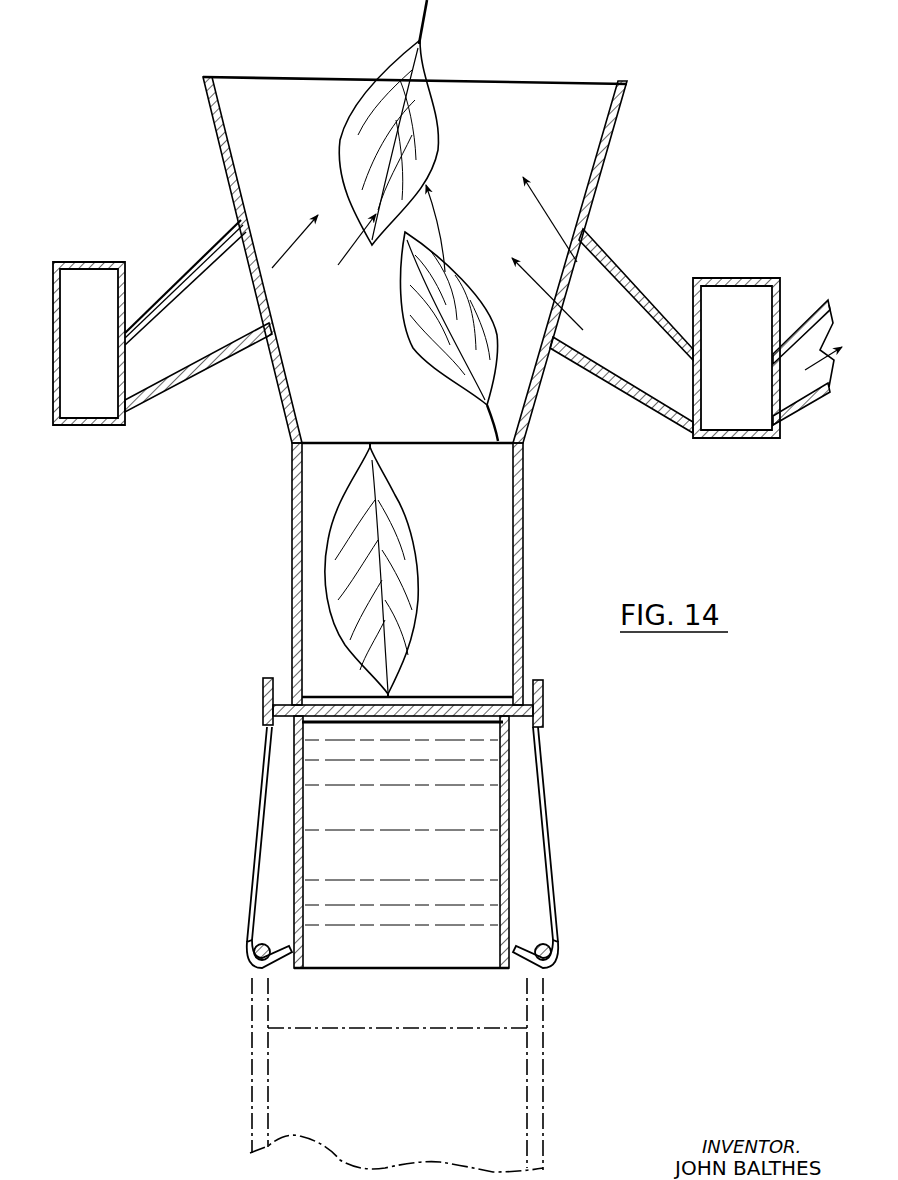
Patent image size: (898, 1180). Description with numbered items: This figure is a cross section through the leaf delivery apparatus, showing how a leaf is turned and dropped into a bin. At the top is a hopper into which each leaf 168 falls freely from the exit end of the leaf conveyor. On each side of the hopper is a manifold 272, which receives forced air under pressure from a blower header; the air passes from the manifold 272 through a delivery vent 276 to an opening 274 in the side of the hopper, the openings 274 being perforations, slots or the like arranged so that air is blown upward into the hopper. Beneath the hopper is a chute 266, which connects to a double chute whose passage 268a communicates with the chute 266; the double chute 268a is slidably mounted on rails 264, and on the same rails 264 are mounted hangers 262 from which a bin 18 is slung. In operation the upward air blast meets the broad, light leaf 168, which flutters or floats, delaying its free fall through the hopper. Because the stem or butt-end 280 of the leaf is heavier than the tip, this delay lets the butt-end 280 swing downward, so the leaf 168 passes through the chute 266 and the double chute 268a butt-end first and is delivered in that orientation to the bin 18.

The bin 18 is at (411, 1115).
The leaf 168 is at (352, 146).
The hanger 262 is at (265, 822).
The rail 264 is at (282, 700).
The chute 266 is at (492, 555).
The double chute 268a is at (432, 878).
The manifold 272 is at (98, 262).
The opening 274 is at (254, 298).
The delivery vent 276 is at (190, 352).
The butt-end of leaf 280 is at (418, 22).